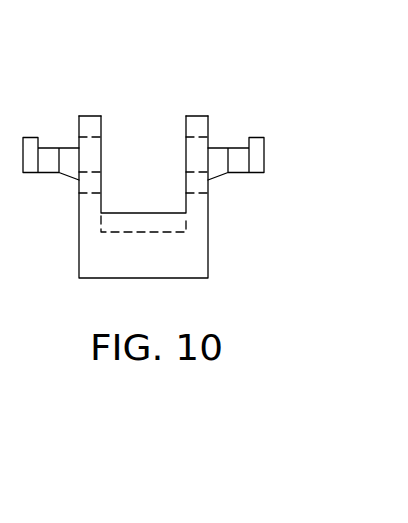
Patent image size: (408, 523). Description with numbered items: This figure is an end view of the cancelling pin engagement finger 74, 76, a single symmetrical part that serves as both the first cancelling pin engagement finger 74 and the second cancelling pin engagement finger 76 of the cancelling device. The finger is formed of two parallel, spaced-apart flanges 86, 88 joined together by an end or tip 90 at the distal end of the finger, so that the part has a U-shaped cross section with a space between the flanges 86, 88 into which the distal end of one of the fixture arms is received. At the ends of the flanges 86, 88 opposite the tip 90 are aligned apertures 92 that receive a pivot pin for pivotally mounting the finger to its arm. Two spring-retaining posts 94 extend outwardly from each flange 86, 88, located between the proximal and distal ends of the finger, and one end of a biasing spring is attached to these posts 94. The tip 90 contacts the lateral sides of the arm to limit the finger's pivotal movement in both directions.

The first cancelling pin engagement finger 74 is at (159, 140).
The second cancelling pin engagement finger 76 is at (153, 113).
The flange 86 is at (79, 193).
The flange 88 is at (208, 193).
The tip 90 is at (153, 267).
The aligned apertures 92 is at (108, 136).
The spring-retaining posts 94 is at (48, 147).